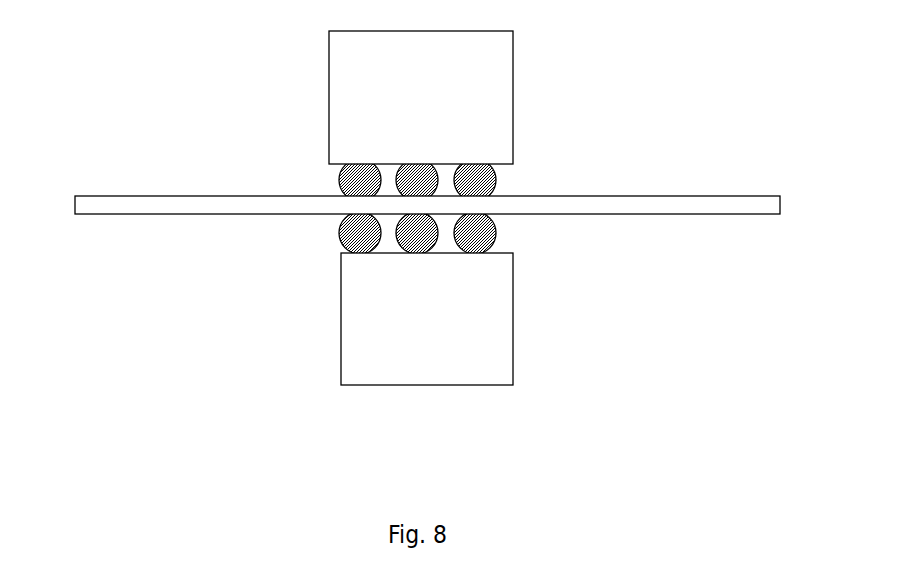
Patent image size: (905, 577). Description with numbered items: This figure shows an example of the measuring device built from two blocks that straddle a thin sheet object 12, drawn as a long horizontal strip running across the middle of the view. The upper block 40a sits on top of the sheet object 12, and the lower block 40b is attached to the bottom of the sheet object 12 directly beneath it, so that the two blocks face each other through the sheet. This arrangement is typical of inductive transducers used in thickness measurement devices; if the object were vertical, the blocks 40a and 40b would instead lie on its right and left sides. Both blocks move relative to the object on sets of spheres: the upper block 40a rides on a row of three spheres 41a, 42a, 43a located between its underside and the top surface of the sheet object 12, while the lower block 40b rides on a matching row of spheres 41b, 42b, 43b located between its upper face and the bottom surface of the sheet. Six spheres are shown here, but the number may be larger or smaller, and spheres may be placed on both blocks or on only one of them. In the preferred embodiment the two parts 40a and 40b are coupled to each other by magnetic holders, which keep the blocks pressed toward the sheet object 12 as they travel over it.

The sheet object 12 is at (447, 201).
The upper block 40a is at (421, 97).
The lower block 40b is at (427, 319).
The sphere 41a is at (359, 167).
The sphere 42a is at (416, 167).
The sphere 43a is at (474, 167).
The sphere 41b is at (366, 252).
The sphere 42b is at (423, 252).
The sphere 43b is at (481, 252).